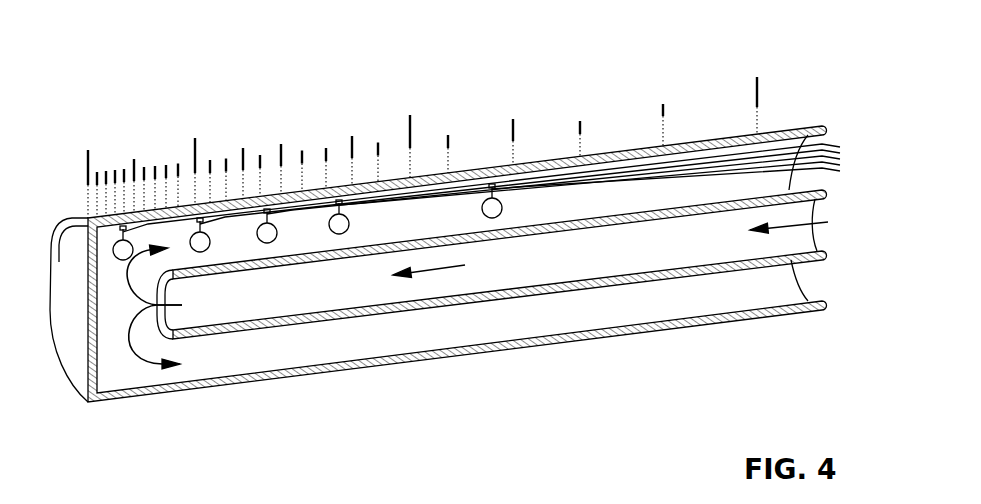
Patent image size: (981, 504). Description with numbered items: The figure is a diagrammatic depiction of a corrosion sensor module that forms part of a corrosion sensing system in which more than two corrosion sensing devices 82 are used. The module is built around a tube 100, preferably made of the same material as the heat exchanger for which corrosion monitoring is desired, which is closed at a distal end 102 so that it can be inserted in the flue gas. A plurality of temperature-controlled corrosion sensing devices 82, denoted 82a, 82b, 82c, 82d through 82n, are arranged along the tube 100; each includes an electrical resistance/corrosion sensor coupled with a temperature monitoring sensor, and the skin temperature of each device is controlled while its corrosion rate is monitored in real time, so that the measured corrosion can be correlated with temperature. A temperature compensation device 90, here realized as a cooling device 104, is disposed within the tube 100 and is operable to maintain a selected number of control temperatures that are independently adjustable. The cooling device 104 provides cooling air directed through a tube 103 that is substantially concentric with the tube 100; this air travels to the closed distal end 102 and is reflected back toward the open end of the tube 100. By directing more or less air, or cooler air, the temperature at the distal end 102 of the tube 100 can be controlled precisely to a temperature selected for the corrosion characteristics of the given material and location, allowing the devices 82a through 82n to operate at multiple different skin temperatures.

The corrosion sensing device 82 is at (82, 61).
The corrosion sensing device 82a is at (117, 245).
The corrosion sensing device 82b is at (201, 228).
The corrosion sensing device 82c is at (262, 223).
The corrosion sensing device 82d is at (331, 216).
The corrosion sensing device 82n is at (486, 198).
The temperature compensation device 90 is at (722, 293).
The tube 100 is at (314, 378).
The distal end 102 is at (52, 309).
The tube 103 is at (520, 298).
The cooling device 104 is at (870, 278).